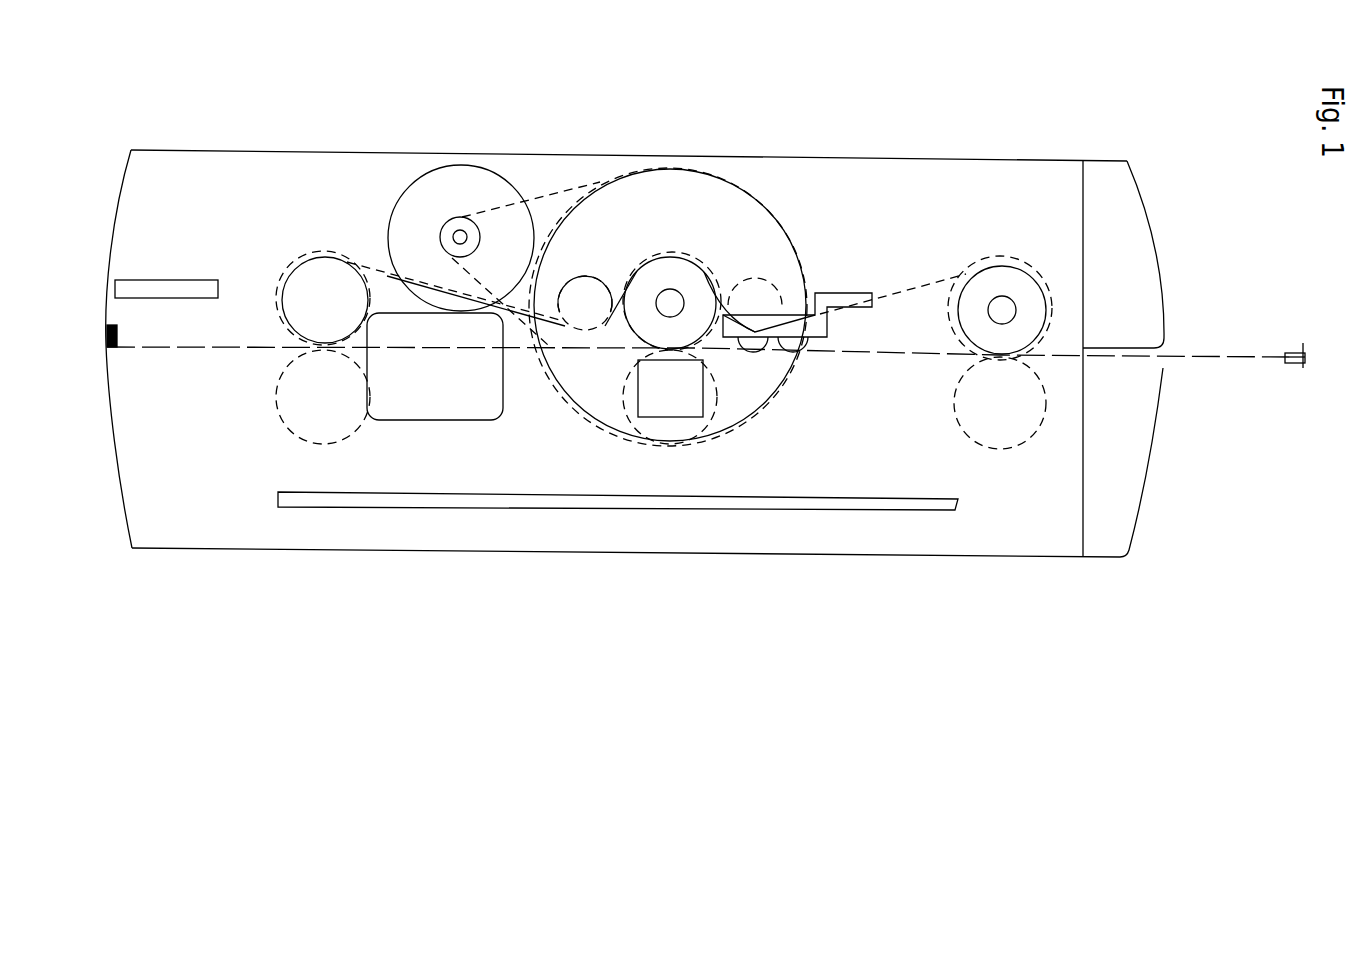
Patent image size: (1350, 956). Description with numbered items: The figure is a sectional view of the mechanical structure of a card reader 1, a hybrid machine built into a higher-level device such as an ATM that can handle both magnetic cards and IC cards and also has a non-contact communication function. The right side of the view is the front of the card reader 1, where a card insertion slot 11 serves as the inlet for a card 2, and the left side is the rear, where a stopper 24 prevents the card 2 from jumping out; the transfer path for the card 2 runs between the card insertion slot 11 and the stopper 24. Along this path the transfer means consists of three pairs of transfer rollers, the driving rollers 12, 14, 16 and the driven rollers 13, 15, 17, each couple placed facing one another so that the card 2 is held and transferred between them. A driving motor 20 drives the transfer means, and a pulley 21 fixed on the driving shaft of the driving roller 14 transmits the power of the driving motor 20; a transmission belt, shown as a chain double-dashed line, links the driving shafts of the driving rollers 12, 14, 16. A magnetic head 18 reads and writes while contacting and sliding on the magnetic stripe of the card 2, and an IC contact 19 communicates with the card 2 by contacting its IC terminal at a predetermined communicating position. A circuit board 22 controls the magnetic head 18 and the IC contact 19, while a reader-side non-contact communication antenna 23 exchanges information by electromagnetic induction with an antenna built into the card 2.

The card reader 1 is at (810, 147).
The card 2 is at (1299, 352).
The card insertion slot 11 is at (1164, 370).
The driving roller 12 is at (1011, 283).
The driven roller 13 is at (995, 428).
The driving roller 14 is at (638, 305).
The driven roller 15 is at (627, 422).
The driving roller 16 is at (325, 298).
The driven roller 17 is at (322, 395).
The magnetic head 18 is at (670, 407).
The IC contact 19 is at (755, 323).
The driving motor 20 is at (455, 178).
The pulley 21 is at (570, 216).
The circuit board 22 is at (287, 500).
The non-contact communication antenna 23 is at (127, 285).
The stopper 24 is at (107, 330).